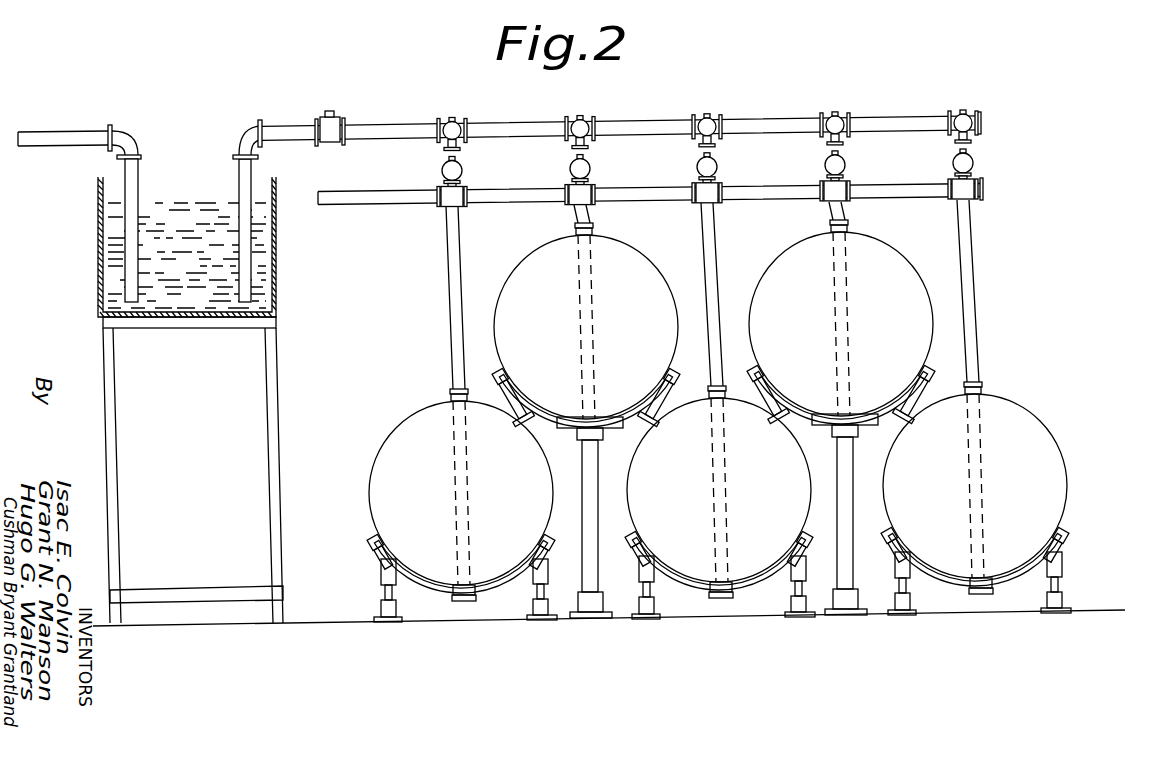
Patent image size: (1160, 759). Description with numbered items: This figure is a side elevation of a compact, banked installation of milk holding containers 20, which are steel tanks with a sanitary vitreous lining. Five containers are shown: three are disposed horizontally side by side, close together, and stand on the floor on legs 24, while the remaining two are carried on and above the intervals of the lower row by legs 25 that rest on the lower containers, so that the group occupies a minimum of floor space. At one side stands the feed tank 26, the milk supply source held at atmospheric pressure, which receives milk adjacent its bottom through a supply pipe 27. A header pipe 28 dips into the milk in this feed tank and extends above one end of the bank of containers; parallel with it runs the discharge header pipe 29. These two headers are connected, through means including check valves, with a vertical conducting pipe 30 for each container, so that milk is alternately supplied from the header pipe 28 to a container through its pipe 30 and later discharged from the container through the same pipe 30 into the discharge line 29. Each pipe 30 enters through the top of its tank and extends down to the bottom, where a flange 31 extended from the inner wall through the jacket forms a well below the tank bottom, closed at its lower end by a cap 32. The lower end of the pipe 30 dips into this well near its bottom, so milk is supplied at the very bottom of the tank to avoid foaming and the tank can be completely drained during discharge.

The holding containers 20 is at (670, 347).
The legs 24 is at (1058, 583).
The legs 25 is at (927, 383).
The feed tank 26 is at (190, 167).
The supply pipe 27 is at (133, 133).
The header pipe 28 is at (296, 130).
The discharge header pipe 29 is at (375, 192).
The vertical conducting pipe 30 is at (450, 298).
The flange 31 is at (452, 588).
The cap 32 is at (463, 600).